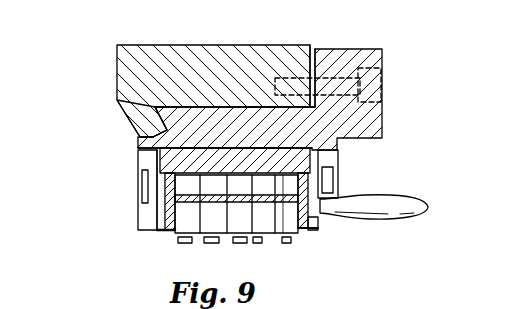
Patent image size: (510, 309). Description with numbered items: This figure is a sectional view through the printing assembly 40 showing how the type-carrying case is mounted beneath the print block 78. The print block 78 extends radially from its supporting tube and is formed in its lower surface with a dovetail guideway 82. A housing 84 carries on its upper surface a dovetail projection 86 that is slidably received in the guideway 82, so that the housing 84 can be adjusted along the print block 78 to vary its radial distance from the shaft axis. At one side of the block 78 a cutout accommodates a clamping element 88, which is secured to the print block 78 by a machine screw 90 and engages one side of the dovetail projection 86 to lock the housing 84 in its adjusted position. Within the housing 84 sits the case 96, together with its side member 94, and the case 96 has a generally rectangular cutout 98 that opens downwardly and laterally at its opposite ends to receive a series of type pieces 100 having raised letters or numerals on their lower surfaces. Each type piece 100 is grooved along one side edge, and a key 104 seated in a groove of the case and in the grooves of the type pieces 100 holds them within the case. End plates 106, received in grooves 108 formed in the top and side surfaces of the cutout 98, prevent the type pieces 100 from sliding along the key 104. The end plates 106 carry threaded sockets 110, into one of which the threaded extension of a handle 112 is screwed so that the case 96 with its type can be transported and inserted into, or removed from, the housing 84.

The assembly 40 is at (92, 72).
The print block 78 is at (168, 55).
The dovetail guideway 82 is at (145, 130).
The housing 84 is at (138, 142).
The dovetail projection 86 is at (300, 122).
The clamping element 88 is at (363, 53).
The machine screw 90 is at (370, 85).
The left side member 94 is at (147, 182).
The case 96 is at (337, 167).
The rectangular cutout 98 is at (158, 223).
The type pieces 100 is at (250, 240).
The key 104 is at (287, 197).
The end plates 106 is at (168, 230).
The grooves 108 is at (155, 158).
The threaded sockets 110 is at (162, 205).
The handle 112 is at (378, 198).